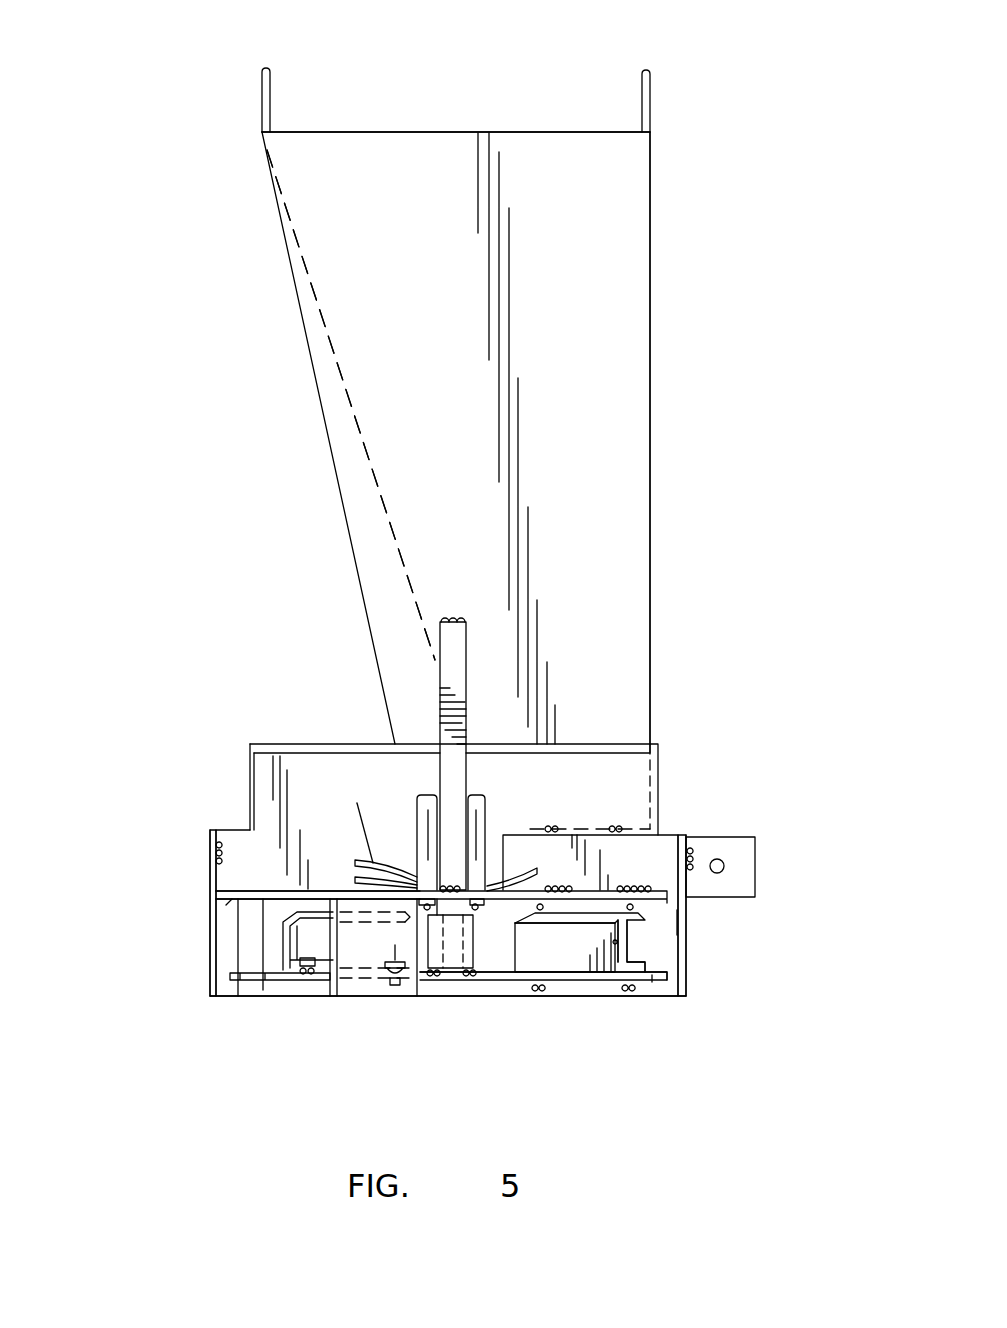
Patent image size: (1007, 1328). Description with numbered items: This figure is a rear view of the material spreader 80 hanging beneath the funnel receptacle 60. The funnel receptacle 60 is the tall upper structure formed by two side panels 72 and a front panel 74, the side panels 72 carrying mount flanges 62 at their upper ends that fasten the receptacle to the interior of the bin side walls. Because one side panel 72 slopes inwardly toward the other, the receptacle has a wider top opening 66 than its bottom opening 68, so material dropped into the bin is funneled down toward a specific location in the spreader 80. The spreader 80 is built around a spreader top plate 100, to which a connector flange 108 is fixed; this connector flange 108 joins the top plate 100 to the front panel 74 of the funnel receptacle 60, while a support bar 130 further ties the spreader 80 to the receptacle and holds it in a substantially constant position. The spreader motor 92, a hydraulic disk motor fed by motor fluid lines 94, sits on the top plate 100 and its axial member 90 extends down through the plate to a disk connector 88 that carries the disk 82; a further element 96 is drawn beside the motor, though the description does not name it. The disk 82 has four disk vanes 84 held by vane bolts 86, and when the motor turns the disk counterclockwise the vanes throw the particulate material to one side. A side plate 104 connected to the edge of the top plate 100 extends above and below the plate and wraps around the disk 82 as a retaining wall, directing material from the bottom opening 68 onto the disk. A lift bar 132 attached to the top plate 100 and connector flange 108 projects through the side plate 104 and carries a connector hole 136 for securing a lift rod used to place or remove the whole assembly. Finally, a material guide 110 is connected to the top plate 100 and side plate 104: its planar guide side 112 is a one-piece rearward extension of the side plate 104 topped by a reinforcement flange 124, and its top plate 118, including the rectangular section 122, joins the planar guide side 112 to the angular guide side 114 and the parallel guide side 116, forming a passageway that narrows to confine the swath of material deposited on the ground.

The funnel receptacle 60 is at (655, 382).
The mount flange 62 is at (262, 85).
The top opening 66 is at (522, 132).
The bottom opening 68 is at (653, 812).
The side panels 72 is at (652, 323).
The front panel 74 is at (603, 222).
The material spreader 80 is at (712, 990).
The disk 82 is at (595, 983).
The disk vanes 84 is at (615, 940).
The vane bolts 86 is at (633, 990).
The disk connector 88 is at (463, 968).
The axial member 90 is at (445, 968).
The spreader motor 92 is at (417, 800).
The motor fluid lines 94 is at (402, 875).
The lever 96 is at (522, 870).
The spreader top plate 100 is at (548, 900).
The side plate 104 is at (690, 918).
The connector flange 108 is at (273, 744).
The material guide 110 is at (195, 920).
The planar guide side 112 is at (210, 966).
The angular guide side 114 is at (378, 945).
The parallel guide side 116 is at (328, 992).
The top plate 118 is at (262, 887).
The rectangular section 122 is at (247, 888).
The reinforcement flange 124 is at (212, 848).
The support bar 130 is at (450, 637).
The lift bar 132 is at (742, 835).
The connector hole 136 is at (725, 863).